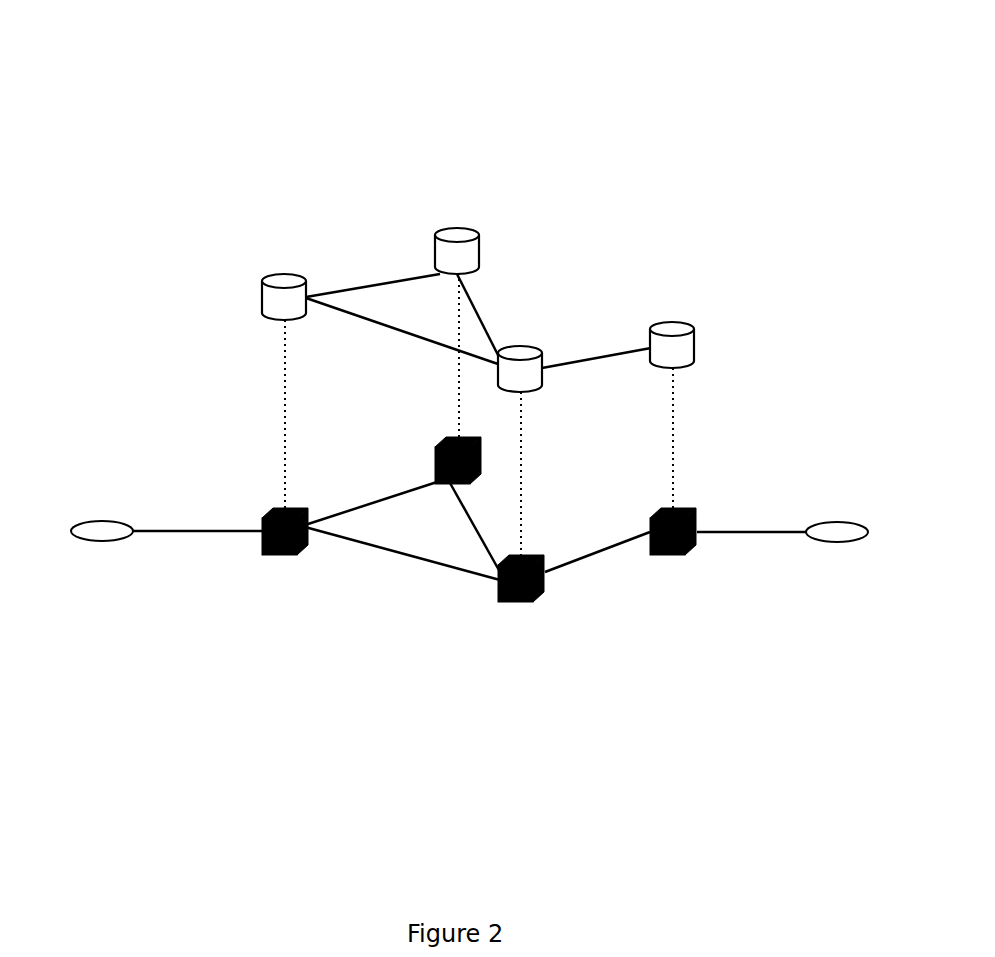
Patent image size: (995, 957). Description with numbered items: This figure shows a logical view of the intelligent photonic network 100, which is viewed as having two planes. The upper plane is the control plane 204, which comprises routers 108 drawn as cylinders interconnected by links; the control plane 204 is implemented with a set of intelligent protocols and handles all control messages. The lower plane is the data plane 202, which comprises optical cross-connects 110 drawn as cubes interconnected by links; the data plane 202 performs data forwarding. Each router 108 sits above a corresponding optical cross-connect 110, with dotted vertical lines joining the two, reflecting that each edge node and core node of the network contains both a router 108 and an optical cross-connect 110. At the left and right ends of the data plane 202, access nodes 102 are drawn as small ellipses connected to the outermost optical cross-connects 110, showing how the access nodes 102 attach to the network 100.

The IPN network 100 is at (637, 91).
The access node 102 is at (105, 522).
The router 108 is at (258, 285).
The optical cross-connect 110 is at (443, 437).
The data plane 202 is at (707, 478).
The control plane 204 is at (677, 258).